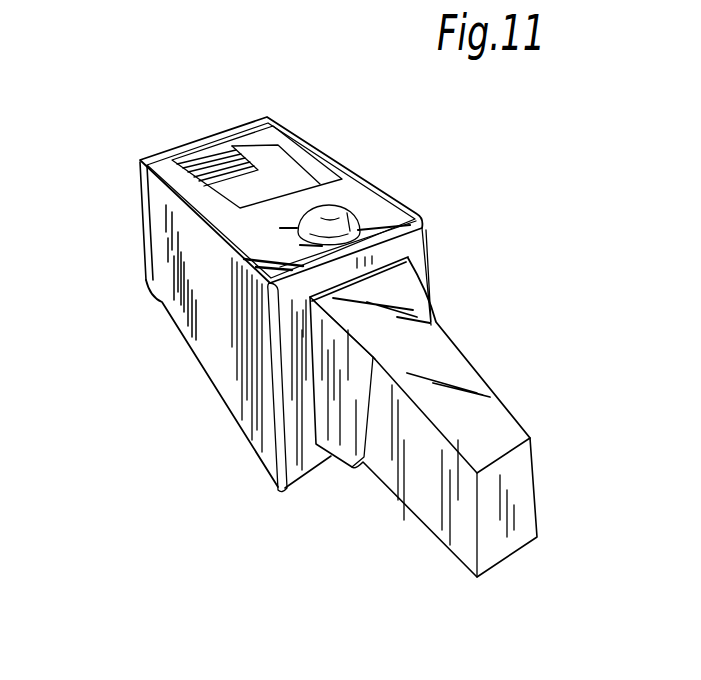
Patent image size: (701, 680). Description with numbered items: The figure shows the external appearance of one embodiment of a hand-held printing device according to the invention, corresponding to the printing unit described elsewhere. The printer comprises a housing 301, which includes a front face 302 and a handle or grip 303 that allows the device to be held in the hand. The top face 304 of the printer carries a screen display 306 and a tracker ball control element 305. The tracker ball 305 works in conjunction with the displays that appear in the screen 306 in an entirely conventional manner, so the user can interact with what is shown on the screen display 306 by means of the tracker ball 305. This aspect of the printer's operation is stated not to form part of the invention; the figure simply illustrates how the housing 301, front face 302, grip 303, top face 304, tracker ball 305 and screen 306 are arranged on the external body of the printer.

The housing 301 is at (205, 302).
The front face 302 is at (141, 213).
The handle or grip 303 is at (440, 362).
The top face 304 is at (390, 207).
The tracker ball control element 305 is at (330, 214).
The screen display 306 is at (240, 137).